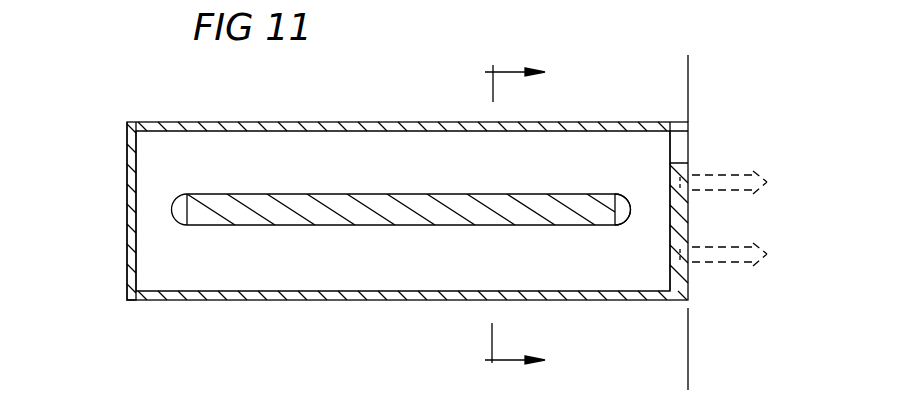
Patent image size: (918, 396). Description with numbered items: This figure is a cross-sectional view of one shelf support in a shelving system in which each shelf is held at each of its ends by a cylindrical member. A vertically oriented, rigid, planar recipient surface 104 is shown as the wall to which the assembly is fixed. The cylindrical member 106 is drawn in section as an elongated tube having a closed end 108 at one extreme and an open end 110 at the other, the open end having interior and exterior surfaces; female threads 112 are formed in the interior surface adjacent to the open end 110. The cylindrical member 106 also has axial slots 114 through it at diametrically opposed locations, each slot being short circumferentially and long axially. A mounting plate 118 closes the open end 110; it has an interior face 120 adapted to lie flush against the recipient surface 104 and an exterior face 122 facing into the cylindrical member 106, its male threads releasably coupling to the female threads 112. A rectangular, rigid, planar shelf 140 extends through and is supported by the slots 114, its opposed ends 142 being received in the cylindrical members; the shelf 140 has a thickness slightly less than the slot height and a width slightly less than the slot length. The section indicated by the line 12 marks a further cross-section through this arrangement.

The section line 12- 12 is at (500, 214).
The recipient surface 104 is at (688, 352).
The cylindrical member 106 is at (583, 124).
The closed end 108 is at (127, 204).
The open end 110 is at (688, 128).
The female threads 112 is at (690, 143).
The axial slots 114 is at (633, 205).
The mounting plate 118 is at (688, 275).
The interior face 120 is at (668, 216).
The exterior face 122 is at (688, 227).
The shelf 140 is at (308, 212).
The opposed ends 142 is at (812, 20).